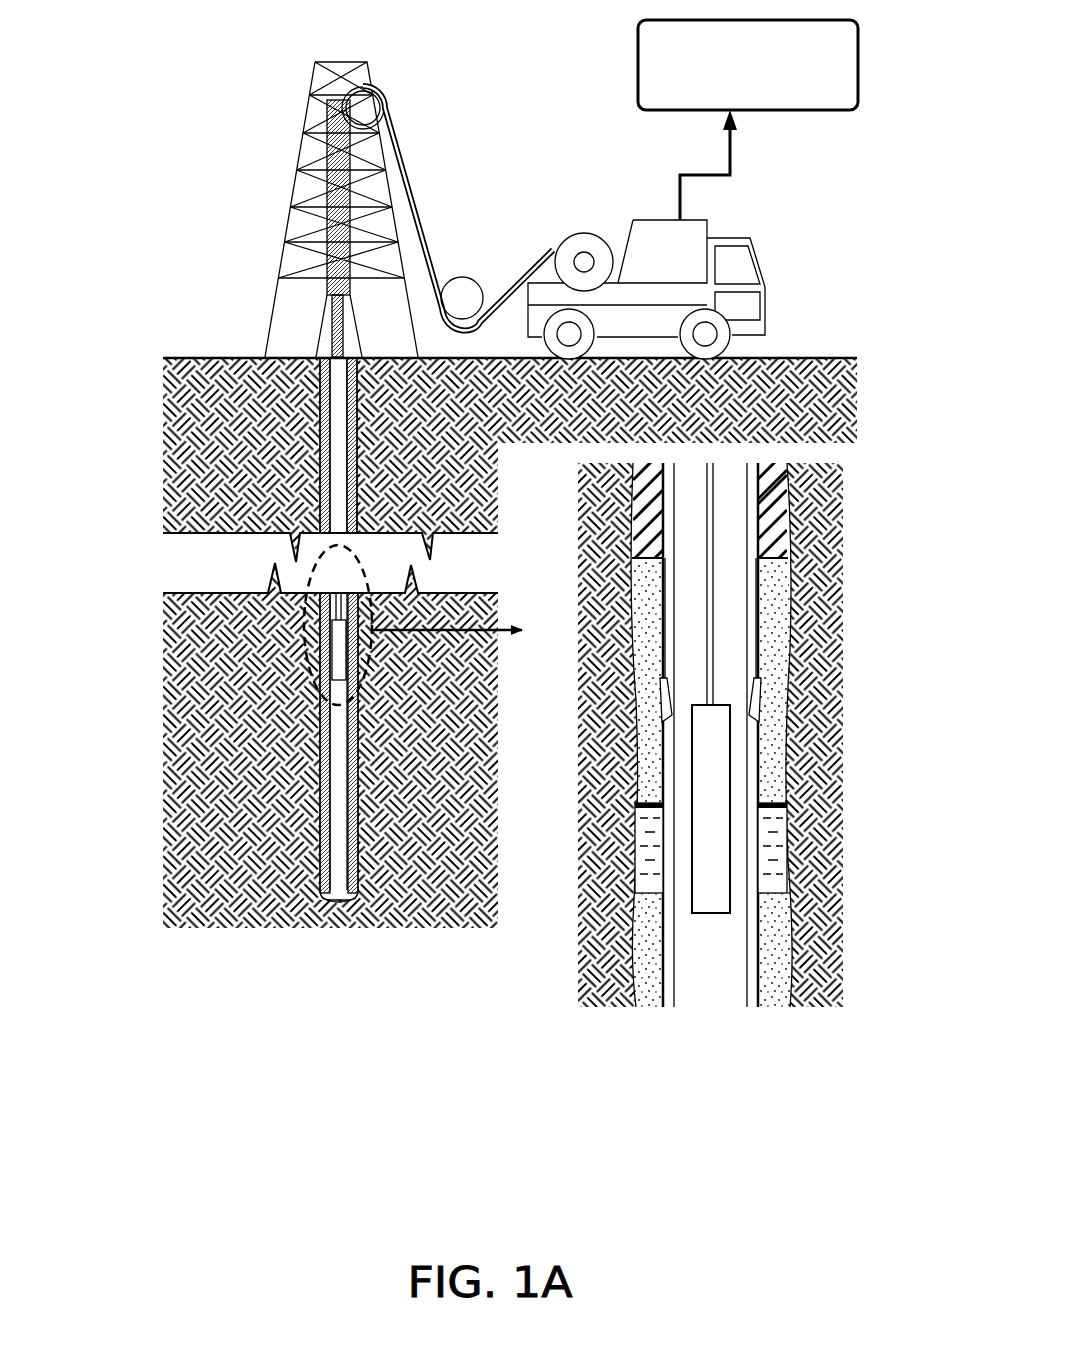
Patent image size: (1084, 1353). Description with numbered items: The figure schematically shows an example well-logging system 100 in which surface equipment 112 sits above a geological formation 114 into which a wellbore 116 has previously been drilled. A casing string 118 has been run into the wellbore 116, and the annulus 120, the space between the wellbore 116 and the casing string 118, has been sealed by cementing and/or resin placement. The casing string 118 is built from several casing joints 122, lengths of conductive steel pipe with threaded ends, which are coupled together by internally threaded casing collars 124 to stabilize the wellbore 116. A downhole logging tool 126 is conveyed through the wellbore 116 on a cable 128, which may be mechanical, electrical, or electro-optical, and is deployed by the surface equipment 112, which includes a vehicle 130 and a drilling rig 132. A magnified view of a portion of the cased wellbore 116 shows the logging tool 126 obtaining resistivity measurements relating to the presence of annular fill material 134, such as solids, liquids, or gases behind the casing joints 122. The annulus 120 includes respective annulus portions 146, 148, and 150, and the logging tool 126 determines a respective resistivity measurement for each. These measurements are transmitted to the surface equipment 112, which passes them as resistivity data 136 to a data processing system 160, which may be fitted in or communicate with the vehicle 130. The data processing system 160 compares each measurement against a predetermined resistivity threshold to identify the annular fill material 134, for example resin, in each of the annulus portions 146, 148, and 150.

The well-logging system 100 is at (131, 887).
The surface equipment 112 is at (544, 107).
The geological formation 114 is at (178, 692).
The wellbore 116 is at (314, 406).
The casing string 118 is at (336, 903).
The annulus 120 is at (316, 476).
The casing joints 122 is at (318, 771).
The casing collars 124 is at (368, 840).
The logging tool 126 is at (330, 626).
The cable 128 is at (422, 199).
The vehicle 130 is at (649, 215).
The drilling rig 132 is at (296, 124).
The annular fill material 134 is at (648, 478).
The resistivity data 136 is at (738, 165).
The annulus portion 146 is at (765, 520).
The annulus portion 148 is at (790, 604).
The annulus portion 150 is at (783, 836).
The data processing system 160 is at (748, 65).